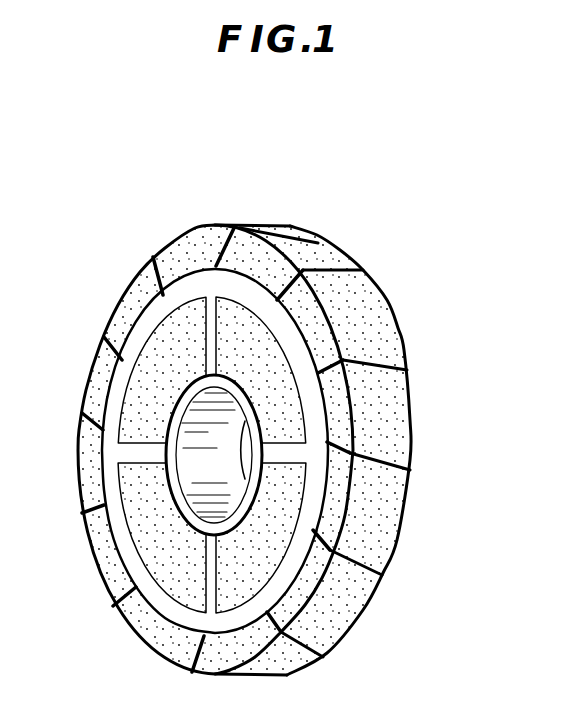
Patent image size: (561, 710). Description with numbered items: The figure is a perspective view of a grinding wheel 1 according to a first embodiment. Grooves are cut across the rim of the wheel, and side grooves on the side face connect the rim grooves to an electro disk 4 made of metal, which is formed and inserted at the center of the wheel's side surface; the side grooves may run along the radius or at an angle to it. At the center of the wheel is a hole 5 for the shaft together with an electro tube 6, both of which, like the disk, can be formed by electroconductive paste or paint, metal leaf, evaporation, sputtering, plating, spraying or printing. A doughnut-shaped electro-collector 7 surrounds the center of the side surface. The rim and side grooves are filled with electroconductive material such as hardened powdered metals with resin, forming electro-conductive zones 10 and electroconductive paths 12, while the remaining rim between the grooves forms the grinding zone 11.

The grinding wheel 1 is at (386, 297).
The electro disk 4 is at (122, 413).
The hole 5 is at (246, 456).
The electro tube 6 is at (193, 458).
The electro-collector 7 is at (240, 513).
The electro-conductive zone 10 is at (373, 362).
The grinding zone 11 is at (328, 252).
The electroconductive path 12 is at (218, 260).